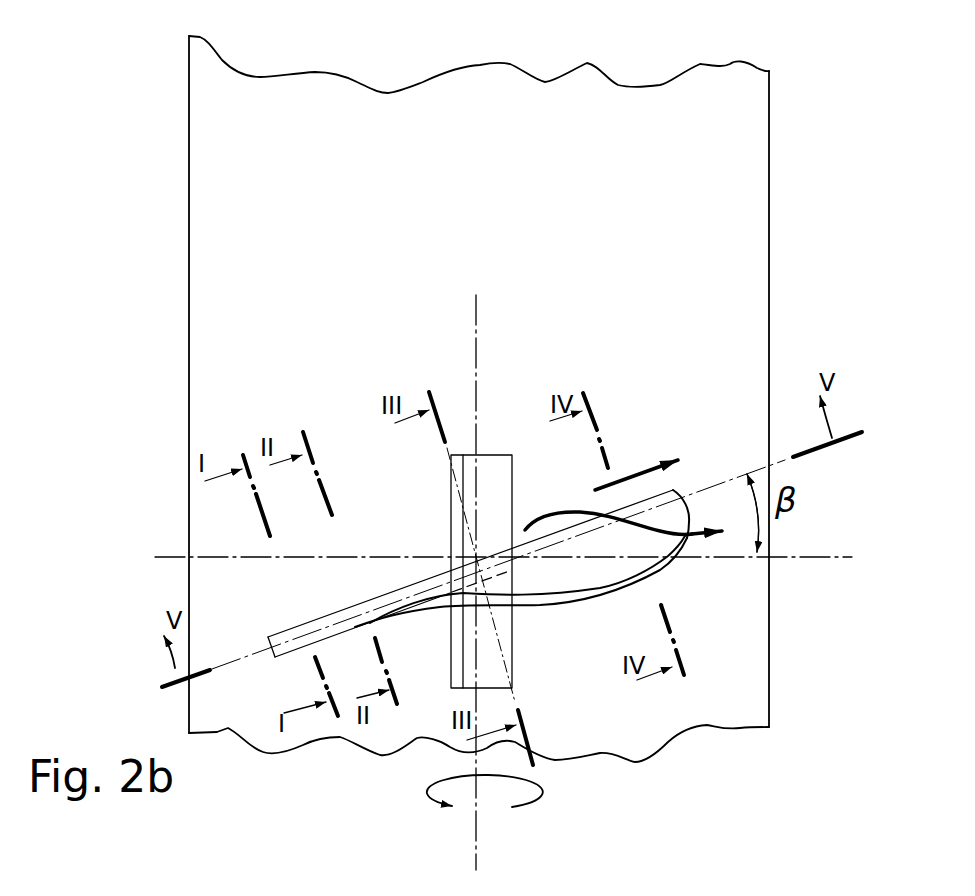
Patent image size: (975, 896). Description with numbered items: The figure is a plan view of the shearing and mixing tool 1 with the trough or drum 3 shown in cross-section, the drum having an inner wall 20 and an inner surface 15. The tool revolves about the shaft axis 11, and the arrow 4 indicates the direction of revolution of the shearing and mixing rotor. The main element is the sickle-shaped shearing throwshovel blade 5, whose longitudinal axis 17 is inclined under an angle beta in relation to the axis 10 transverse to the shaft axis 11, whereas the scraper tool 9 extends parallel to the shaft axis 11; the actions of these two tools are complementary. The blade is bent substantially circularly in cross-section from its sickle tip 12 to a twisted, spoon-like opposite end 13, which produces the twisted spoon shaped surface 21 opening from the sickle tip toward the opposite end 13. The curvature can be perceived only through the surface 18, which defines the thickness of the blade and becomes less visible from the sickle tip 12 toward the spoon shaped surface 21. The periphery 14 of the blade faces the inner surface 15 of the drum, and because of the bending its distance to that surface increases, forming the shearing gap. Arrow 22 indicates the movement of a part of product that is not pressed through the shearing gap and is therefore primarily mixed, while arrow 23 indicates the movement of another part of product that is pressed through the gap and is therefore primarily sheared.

The shearing and mixing tool 1 is at (354, 238).
The drum 3 is at (771, 96).
The direction of revolution arrow 4 is at (542, 787).
The shearing throwshovel blade 5 is at (568, 566).
The scraper tool 9 is at (489, 468).
The axis transverse to the shaft axis 10 is at (169, 553).
The shaft axis 11 is at (479, 317).
The sickle tip 12 is at (273, 656).
The twisted spoon-like opposite end 13 is at (676, 515).
The periphery of the shearing throwshovel 14 is at (580, 598).
The inner surface of the drum 15 is at (766, 255).
The longitudinal axis of the shearing throwshovel 17 is at (723, 477).
The surface of the width of the throwshovel 18 is at (332, 624).
The inner wall 20 is at (681, 125).
The twisted spoon shaped surface 21 is at (610, 543).
The product movement arrow (mixing) 22 is at (656, 461).
The product movement arrow (shearing) 23 is at (698, 541).